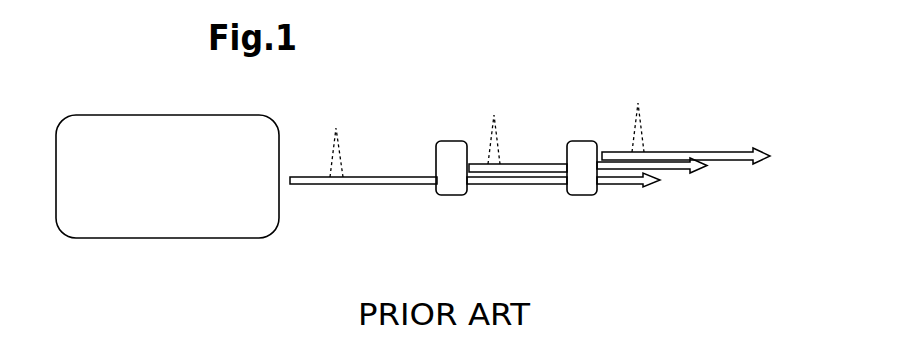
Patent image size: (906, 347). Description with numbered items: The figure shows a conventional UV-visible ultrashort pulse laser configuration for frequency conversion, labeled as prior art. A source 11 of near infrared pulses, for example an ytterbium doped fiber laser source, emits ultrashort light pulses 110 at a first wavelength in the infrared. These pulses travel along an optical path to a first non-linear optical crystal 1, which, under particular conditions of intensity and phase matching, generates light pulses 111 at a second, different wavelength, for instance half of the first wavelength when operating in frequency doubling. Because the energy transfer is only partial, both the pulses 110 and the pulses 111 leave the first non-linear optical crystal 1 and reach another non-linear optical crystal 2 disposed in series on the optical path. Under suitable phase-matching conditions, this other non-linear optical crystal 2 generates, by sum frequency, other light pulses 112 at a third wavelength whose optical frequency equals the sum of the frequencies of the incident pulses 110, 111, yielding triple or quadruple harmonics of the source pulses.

The source 11 is at (173, 182).
The light pulses 110 is at (358, 184).
The light pulses 111 is at (521, 164).
The other light pulses 112 is at (658, 152).
The first non-linear optical crystal 1 is at (452, 141).
The other non-linear optical crystal 2 is at (578, 141).